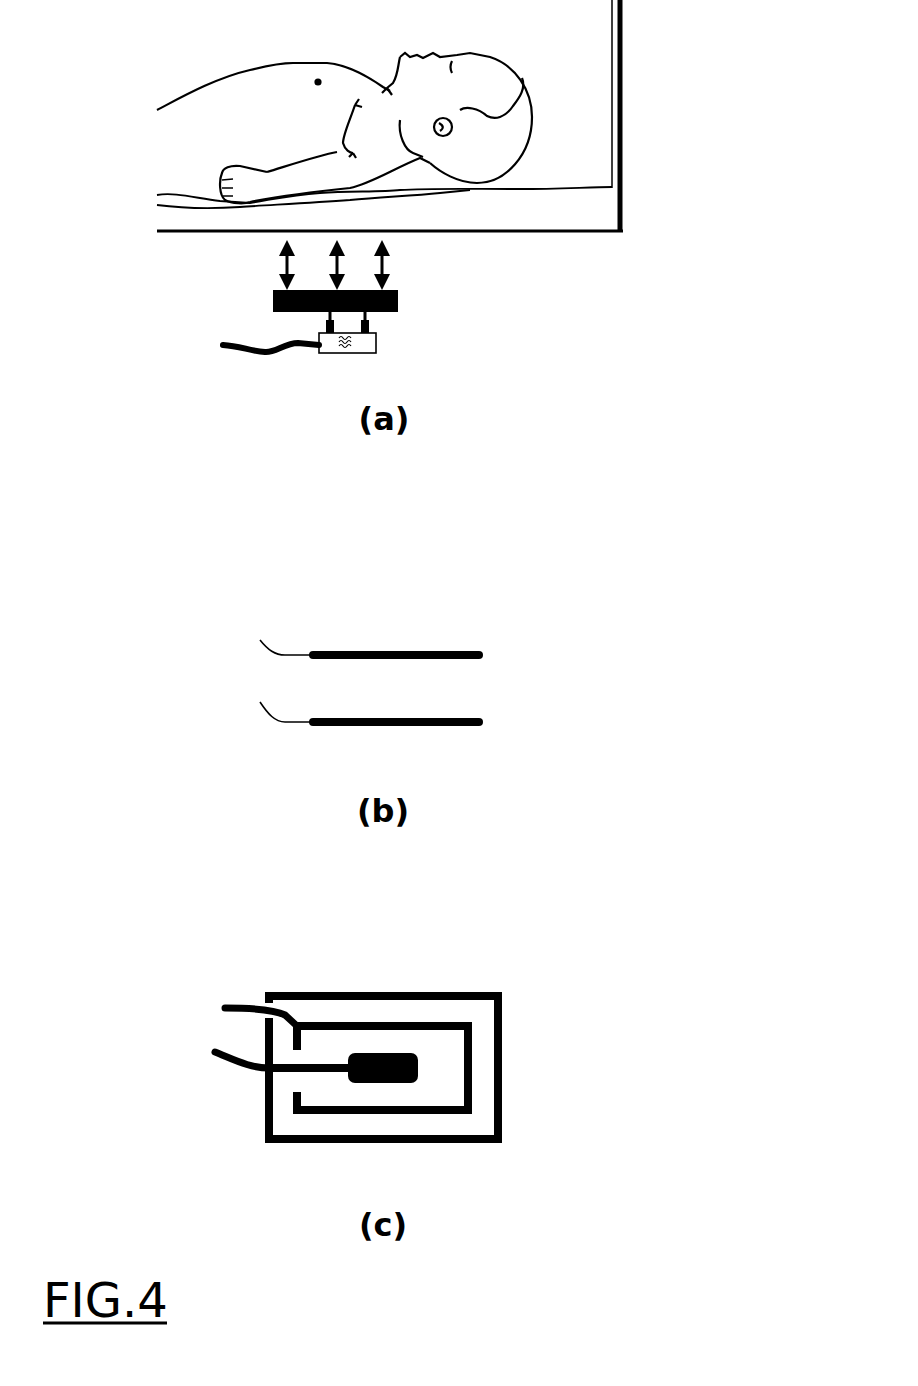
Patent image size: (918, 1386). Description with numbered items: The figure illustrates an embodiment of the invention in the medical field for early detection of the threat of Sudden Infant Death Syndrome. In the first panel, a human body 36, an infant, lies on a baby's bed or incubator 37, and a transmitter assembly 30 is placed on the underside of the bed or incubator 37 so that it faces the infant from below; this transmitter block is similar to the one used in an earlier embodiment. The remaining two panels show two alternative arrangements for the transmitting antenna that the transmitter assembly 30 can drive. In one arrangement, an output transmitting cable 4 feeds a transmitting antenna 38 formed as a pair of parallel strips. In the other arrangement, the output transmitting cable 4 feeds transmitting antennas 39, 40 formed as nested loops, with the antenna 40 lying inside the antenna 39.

The human body 36 is at (344, 128).
The baby's bed or incubator 37 is at (553, 207).
The transmitter assembly 30 is at (417, 278).
The transmitting antenna 38 is at (458, 662).
The output transmitting cable 4 is at (287, 660).
The transmitting antenna 39 is at (263, 1142).
The transmitting antenna 40 is at (473, 1112).